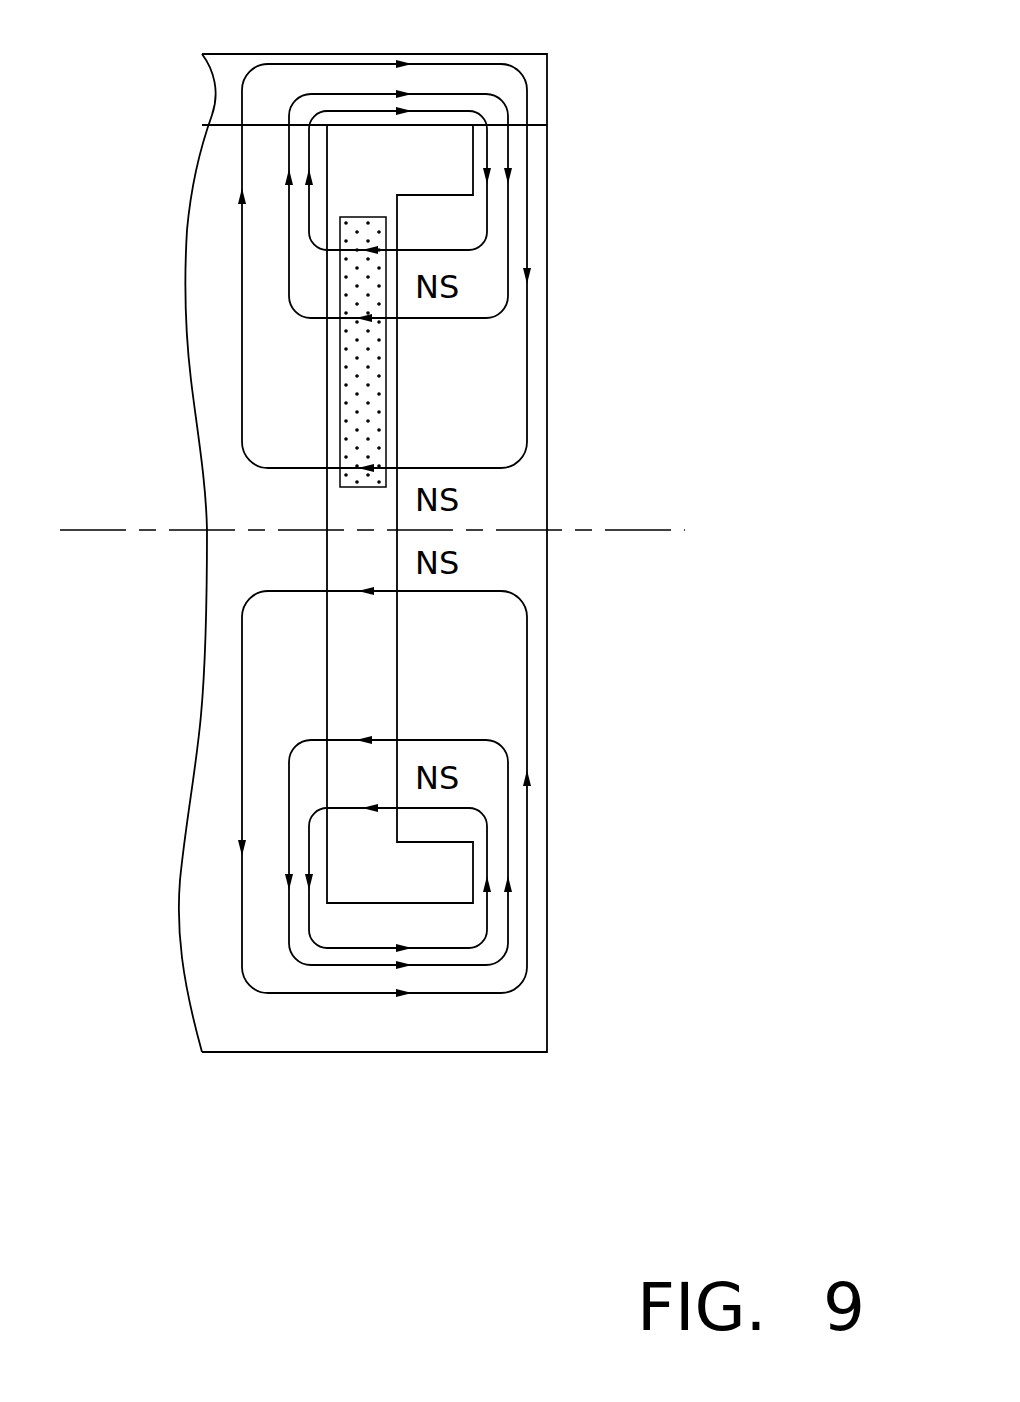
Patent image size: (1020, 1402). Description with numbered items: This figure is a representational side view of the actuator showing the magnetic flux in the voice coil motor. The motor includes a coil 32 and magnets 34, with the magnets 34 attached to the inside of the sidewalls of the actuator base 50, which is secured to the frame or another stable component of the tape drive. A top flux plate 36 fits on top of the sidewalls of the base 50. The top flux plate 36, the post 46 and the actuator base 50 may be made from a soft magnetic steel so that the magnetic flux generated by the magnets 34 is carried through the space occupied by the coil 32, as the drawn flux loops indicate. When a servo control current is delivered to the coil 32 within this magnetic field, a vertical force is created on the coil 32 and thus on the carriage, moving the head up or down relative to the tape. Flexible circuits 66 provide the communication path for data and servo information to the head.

The coil 32 is at (338, 414).
The magnets 34 is at (447, 377).
The top flux plate 36 is at (541, 85).
The post 46 is at (200, 330).
The actuator base 50 is at (541, 237).
The flexible circuits 66 is at (343, 111).